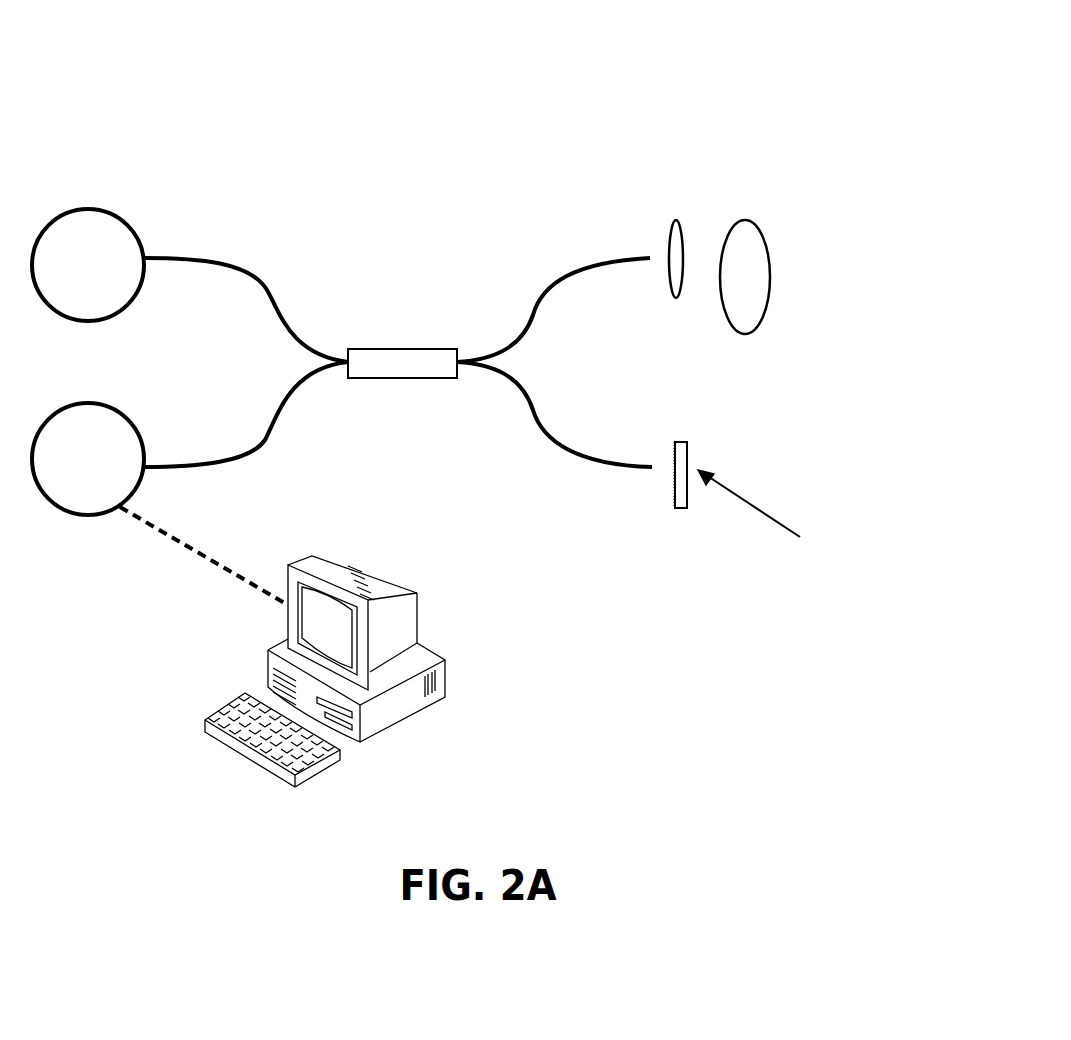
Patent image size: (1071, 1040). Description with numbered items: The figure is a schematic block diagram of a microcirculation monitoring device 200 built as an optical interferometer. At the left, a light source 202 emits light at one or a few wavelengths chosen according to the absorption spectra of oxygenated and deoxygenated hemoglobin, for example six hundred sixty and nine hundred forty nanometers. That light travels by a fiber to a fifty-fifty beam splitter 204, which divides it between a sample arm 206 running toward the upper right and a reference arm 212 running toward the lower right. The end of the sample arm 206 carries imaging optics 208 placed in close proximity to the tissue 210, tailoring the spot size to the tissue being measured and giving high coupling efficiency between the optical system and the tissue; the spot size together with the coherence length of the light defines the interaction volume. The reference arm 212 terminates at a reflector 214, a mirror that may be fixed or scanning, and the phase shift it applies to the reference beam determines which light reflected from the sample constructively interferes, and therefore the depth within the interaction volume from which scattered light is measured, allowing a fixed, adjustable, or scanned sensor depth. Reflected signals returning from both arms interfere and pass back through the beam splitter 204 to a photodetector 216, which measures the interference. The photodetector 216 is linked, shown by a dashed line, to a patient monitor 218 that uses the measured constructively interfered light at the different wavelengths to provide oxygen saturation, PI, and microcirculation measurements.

The microcirculation monitoring device 200 is at (420, 73).
The light source 202 is at (133, 225).
The beam splitter 204 is at (365, 378).
The sample arm 206 is at (557, 275).
The imaging optics 208 is at (682, 225).
The tissue 210 is at (750, 318).
The reference arm 212 is at (540, 430).
The reflector 214 is at (688, 450).
The photodetector 216 is at (132, 417).
The patient monitor 218 is at (382, 733).